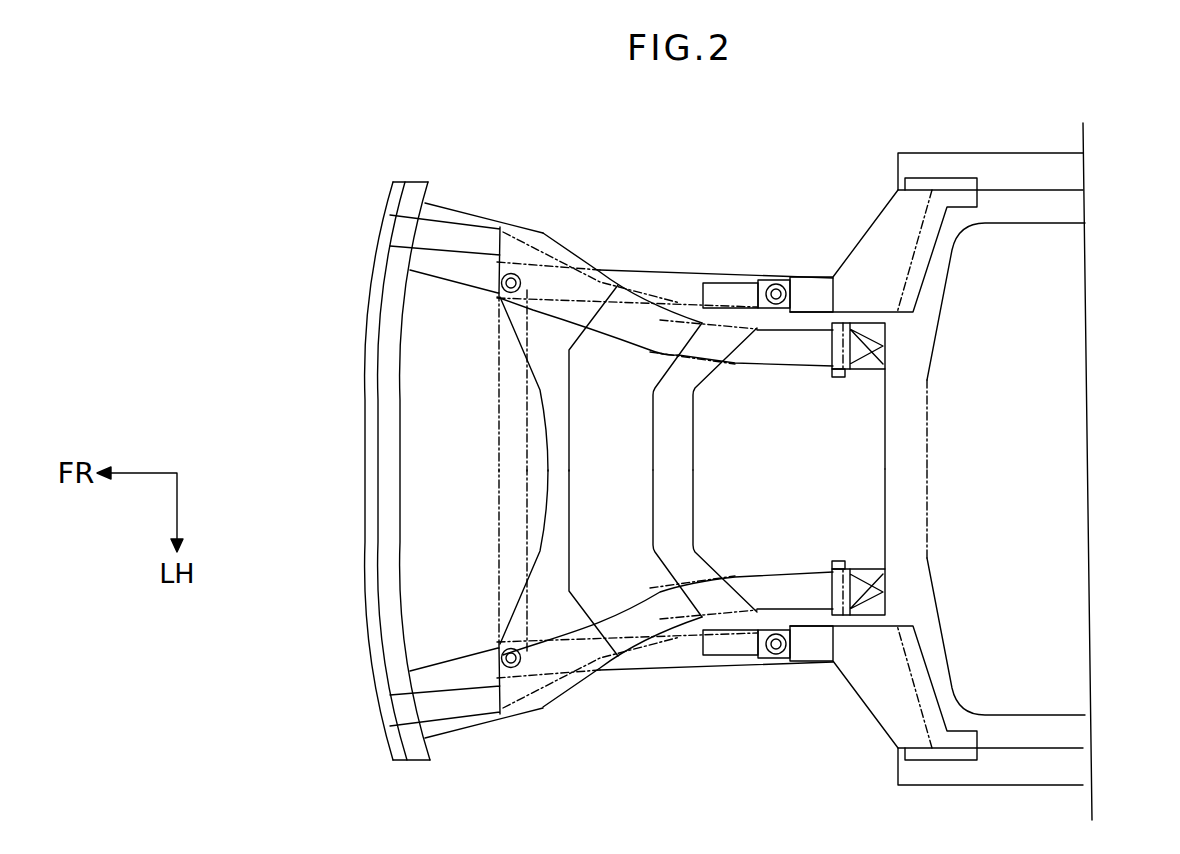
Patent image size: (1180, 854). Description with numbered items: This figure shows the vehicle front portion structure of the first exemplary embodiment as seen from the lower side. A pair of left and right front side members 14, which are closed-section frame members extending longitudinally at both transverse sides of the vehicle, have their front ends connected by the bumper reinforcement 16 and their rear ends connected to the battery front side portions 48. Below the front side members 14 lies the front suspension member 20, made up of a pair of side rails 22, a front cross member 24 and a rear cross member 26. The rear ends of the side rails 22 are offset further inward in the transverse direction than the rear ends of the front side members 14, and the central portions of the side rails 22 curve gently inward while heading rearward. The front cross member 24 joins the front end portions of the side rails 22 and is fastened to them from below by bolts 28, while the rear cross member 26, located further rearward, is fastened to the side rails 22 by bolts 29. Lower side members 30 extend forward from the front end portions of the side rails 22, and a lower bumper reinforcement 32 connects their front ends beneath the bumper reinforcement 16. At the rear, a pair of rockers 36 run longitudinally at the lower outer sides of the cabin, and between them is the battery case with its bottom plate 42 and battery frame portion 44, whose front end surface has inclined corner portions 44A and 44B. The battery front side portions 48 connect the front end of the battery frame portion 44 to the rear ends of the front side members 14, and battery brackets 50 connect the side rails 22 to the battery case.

The front side member 14 is at (624, 673).
The bumper reinforcement 16 is at (418, 765).
The front suspension member 20 is at (540, 735).
The side rail 22 is at (677, 622).
The front cross member 24 is at (563, 497).
The rear cross member 26 is at (666, 443).
The bolt 28 is at (497, 654).
The bolt 29 is at (778, 667).
The lower side member 30 is at (466, 722).
The lower bumper reinforcement 32 is at (376, 272).
The rocker 36 is at (1033, 790).
The bottom plate 42 is at (1060, 508).
The battery frame portion 44 is at (1018, 192).
The corner portion 44A is at (886, 595).
The corner portion 44B is at (886, 345).
The battery front side portion 48 is at (872, 714).
The battery bracket 50 is at (855, 565).